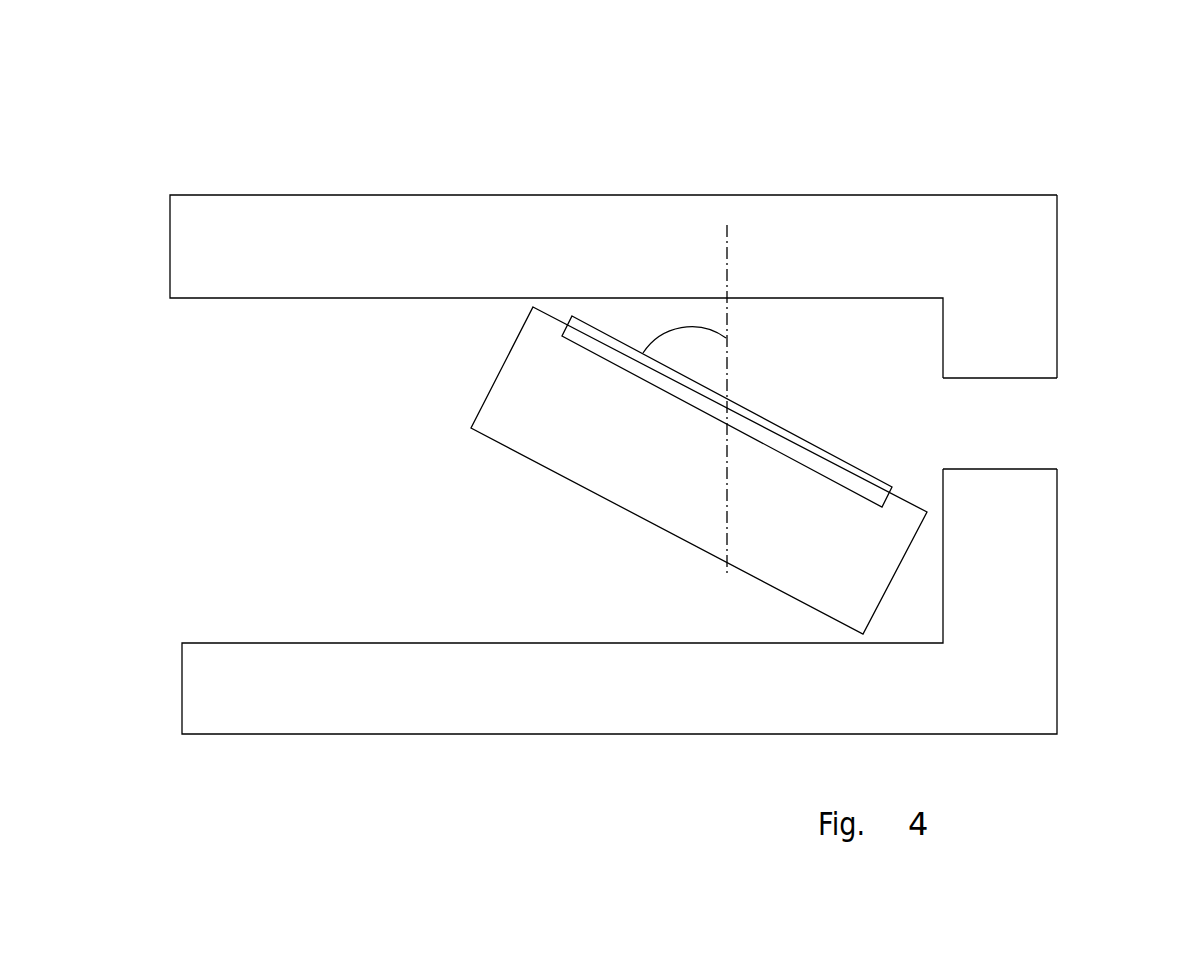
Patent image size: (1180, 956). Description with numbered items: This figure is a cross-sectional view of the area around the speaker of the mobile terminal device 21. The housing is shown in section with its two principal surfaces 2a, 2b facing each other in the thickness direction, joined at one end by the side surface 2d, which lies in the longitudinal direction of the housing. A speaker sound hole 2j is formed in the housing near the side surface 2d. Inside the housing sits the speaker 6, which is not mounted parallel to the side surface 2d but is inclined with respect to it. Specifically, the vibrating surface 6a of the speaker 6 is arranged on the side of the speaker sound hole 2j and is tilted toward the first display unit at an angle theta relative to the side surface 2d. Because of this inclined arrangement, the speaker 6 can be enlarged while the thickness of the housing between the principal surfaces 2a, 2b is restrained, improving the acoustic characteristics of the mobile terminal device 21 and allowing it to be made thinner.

The mobile terminal device 21 is at (668, 430).
The principal surface 2a is at (331, 208).
The principal surface 2b is at (573, 708).
The side surface 2d is at (1019, 352).
The speaker sound hole 2j is at (995, 378).
The speaker 6 is at (577, 501).
The vibrating surface 6a is at (790, 437).